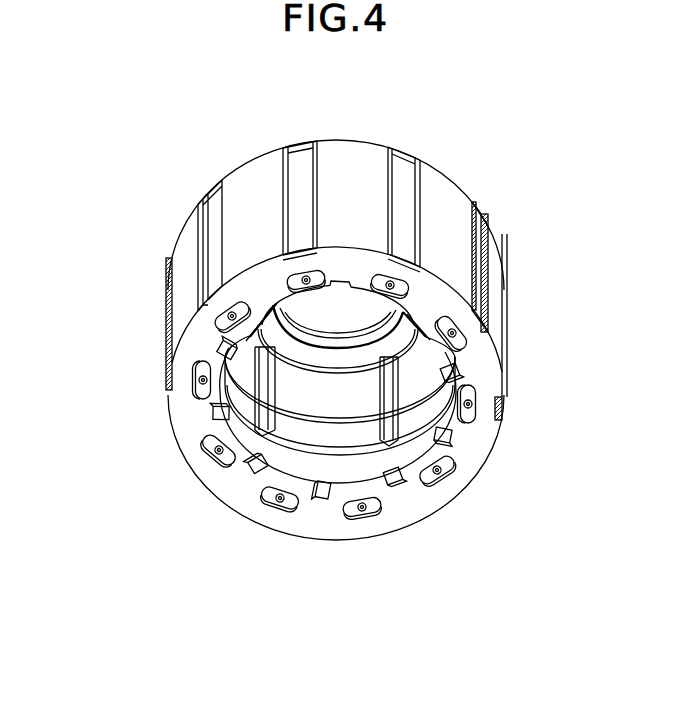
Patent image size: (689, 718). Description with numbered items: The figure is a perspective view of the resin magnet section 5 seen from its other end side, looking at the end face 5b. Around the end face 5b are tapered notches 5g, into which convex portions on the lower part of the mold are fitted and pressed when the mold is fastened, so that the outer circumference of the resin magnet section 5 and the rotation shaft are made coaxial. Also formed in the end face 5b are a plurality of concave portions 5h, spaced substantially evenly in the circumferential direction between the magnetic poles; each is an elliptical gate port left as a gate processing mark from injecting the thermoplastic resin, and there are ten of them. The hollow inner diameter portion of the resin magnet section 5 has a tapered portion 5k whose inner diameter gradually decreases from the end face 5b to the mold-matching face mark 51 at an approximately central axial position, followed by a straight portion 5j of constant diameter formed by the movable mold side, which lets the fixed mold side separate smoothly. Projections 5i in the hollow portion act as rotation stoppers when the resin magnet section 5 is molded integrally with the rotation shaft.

The resin magnet section 5 is at (397, 120).
The end face 5b is at (413, 500).
The tapered notches 5g is at (447, 433).
The concave portions 5h is at (446, 468).
The projections 5i is at (377, 396).
The straight portion 5j is at (293, 395).
The tapered portion 5k is at (241, 383).
The mold-matching face mark 51 is at (326, 418).